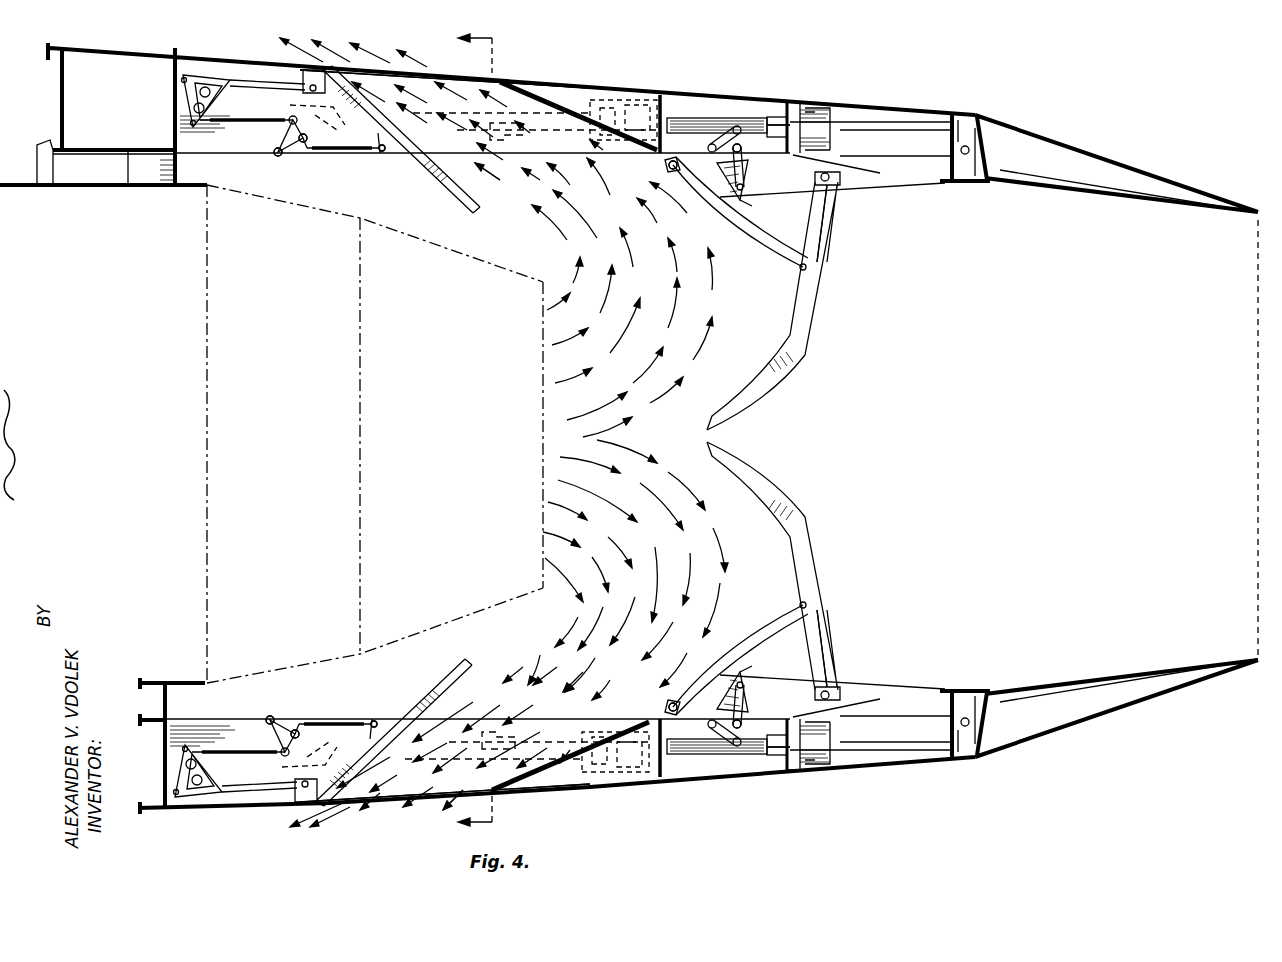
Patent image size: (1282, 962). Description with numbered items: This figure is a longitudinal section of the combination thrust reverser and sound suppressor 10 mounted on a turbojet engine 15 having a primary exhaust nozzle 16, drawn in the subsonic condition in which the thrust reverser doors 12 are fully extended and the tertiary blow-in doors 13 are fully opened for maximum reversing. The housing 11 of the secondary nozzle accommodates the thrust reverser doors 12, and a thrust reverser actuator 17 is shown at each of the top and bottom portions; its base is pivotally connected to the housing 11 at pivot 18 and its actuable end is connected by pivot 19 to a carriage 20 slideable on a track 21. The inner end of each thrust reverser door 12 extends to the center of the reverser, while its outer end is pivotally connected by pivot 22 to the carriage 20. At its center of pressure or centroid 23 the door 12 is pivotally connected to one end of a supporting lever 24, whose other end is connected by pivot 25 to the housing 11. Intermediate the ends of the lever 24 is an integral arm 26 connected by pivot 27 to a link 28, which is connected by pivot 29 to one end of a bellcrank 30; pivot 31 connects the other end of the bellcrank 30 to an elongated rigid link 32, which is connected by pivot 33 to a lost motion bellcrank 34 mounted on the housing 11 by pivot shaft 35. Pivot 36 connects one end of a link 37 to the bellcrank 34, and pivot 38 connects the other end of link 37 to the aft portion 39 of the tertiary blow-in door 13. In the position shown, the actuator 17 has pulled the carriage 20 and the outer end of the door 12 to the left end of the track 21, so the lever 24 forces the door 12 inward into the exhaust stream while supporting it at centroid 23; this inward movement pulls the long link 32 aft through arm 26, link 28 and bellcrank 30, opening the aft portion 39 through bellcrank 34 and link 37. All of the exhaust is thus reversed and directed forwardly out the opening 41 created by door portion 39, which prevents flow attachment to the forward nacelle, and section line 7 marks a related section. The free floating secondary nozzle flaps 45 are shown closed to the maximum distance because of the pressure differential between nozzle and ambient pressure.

The section line 7 is at (483, 431).
The combination thrust reverser and sound suppressor 10 is at (1040, 86).
The housing 11 is at (628, 92).
The thrust reverser door 12 is at (800, 362).
The tertiary blow-in door 13 is at (385, 115).
The turbojet engine 15 is at (168, 409).
The primary exhaust nozzle 16 is at (470, 458).
The thrust reverser actuator 17 is at (722, 118).
The pivot 18 is at (520, 93).
The pivot 19 is at (803, 105).
The carriage 20 is at (830, 115).
The track 21 is at (875, 118).
The pivot 22 is at (845, 185).
The centroid 23 is at (810, 267).
The supporting lever 24 is at (715, 226).
The pivot 25 is at (665, 165).
The integral arm 26 is at (752, 204).
The pivot 27 is at (750, 183).
The link 28 is at (748, 170).
The pivot 29 is at (745, 146).
The bellcrank 30 is at (716, 152).
The pivot 31 is at (752, 120).
The elongated rigid link 32 is at (664, 118).
The pivot 33 is at (300, 105).
The lost motion bellcrank 34 is at (278, 142).
The pivot shaft 35 is at (310, 144).
The pivot 36 is at (282, 156).
The link 37 is at (340, 153).
The pivot 38 is at (383, 153).
The aft portion 39 is at (455, 198).
The opening 41 is at (474, 78).
The secondary nozzle flaps 45 is at (1052, 169).